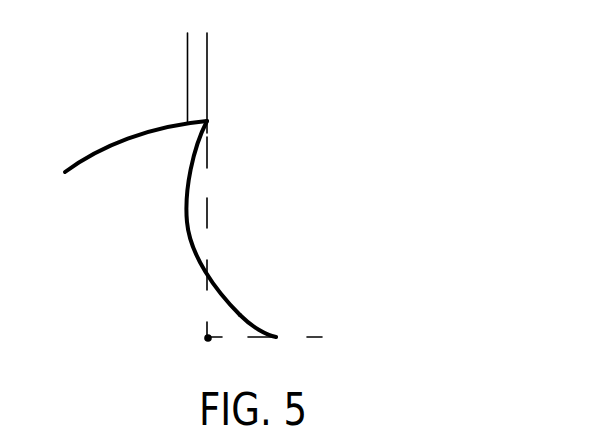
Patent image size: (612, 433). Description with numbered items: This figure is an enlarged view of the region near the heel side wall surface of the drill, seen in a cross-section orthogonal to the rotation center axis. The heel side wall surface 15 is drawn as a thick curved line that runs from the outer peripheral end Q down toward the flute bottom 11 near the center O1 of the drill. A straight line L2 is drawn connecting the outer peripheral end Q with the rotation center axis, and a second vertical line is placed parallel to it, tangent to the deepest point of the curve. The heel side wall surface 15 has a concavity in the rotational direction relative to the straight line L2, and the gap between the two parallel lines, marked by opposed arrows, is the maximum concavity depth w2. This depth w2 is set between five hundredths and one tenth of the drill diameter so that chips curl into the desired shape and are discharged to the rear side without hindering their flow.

The flute bottom 11 is at (241, 319).
The heel side wall surface 15 is at (192, 226).
The outer peripheral end Q is at (207, 121).
The center O1 is at (245, 346).
The straight line L2 is at (263, 49).
The maximum concavity depth w2 is at (120, 49).